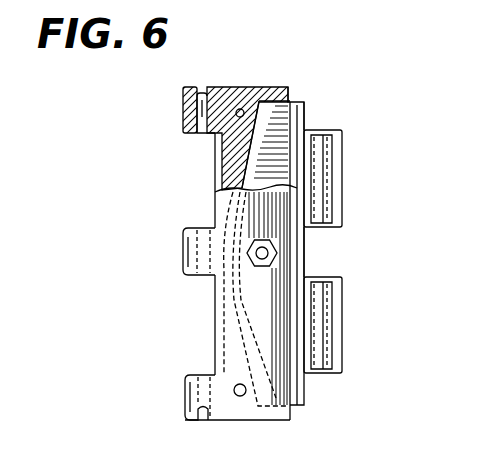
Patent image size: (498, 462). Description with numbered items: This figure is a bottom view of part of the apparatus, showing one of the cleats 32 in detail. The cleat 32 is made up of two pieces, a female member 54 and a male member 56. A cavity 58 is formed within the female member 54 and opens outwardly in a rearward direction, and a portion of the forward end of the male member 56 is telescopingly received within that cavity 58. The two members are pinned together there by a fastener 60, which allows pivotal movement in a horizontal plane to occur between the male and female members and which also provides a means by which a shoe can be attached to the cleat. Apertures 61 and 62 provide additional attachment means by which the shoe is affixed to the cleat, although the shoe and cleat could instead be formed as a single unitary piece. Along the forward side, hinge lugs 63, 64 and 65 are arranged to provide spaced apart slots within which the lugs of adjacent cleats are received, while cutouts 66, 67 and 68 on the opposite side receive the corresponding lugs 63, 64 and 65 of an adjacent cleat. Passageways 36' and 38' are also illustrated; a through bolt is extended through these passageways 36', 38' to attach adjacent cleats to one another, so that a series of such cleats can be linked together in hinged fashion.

The cleat 32 is at (291, 74).
The passageway 36' is at (190, 90).
The passageway 38' is at (351, 167).
The female member 54 is at (229, 78).
The male member 56 is at (315, 92).
The cavity 58 is at (256, 186).
The fastener 60 is at (251, 256).
The aperture 61 is at (241, 108).
The aperture 62 is at (247, 392).
The hinge lug 63 is at (185, 378).
The hinge lug 64 is at (183, 244).
The hinge lug 65 is at (182, 116).
The cutout 66 is at (304, 386).
The cutout 67 is at (308, 254).
The cutout 68 is at (305, 128).